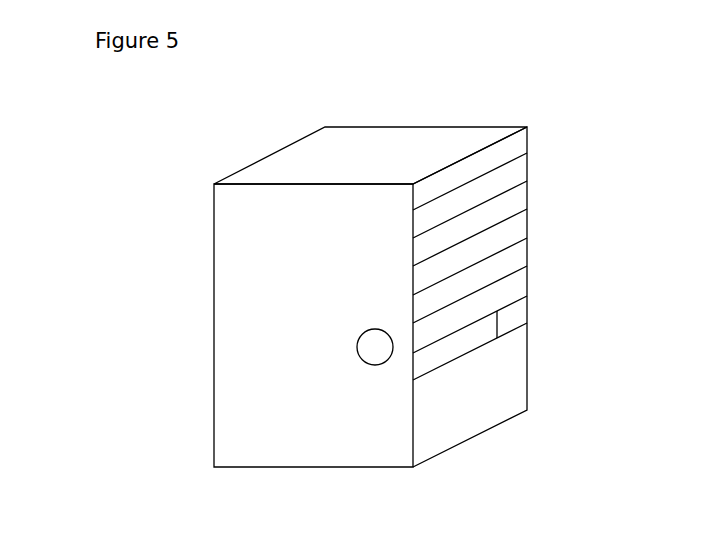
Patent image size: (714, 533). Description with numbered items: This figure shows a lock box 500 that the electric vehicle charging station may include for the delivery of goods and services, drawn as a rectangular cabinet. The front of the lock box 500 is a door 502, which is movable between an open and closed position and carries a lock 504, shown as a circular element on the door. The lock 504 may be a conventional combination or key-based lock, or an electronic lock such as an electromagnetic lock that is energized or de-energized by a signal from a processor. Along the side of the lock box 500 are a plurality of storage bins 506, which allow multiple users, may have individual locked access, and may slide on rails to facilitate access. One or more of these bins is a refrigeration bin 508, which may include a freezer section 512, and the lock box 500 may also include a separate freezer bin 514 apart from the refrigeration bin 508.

The lock box 500 is at (213, 301).
The door 502 is at (227, 410).
The lock 504 is at (390, 352).
The storage bins 506 is at (527, 202).
The refrigeration bin 508 is at (450, 358).
The freezer section 512 is at (515, 315).
The freezer bin 514 is at (517, 283).